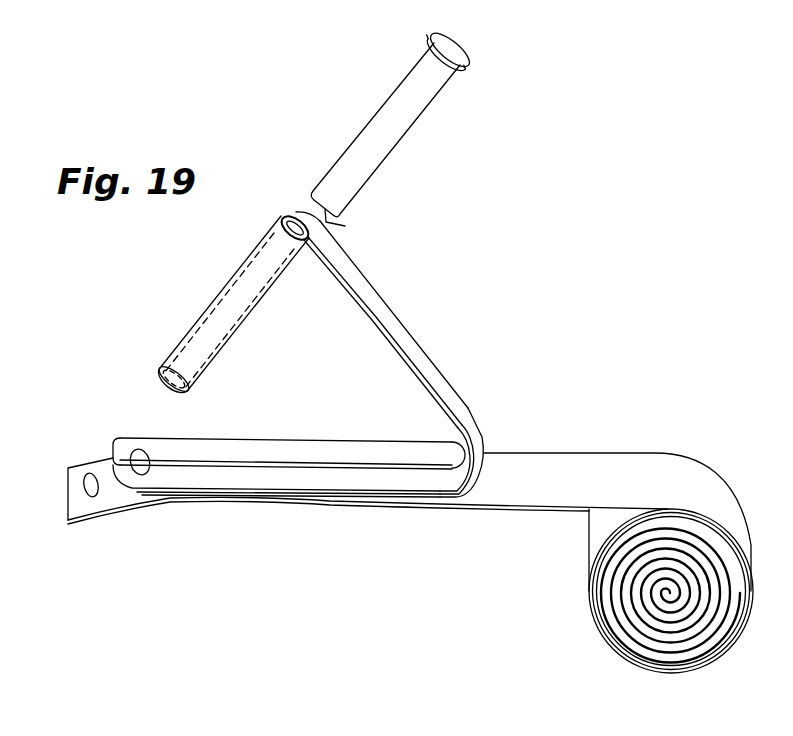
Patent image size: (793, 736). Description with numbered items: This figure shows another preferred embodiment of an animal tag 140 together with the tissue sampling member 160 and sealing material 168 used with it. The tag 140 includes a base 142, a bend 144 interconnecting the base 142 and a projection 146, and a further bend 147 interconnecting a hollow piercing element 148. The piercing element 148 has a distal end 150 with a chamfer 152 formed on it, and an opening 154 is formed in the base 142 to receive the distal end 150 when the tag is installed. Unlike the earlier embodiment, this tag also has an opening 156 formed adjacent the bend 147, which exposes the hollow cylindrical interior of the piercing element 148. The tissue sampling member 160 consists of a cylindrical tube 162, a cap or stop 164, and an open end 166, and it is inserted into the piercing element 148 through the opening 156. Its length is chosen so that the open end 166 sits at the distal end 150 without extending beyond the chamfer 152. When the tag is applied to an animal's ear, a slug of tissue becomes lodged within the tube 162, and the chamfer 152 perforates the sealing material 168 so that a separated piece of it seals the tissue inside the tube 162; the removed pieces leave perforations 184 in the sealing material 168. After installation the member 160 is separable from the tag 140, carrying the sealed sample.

The tag 140 is at (473, 242).
The base 142 is at (287, 478).
The bend 144 is at (492, 483).
The projection 146 is at (423, 363).
The bend 147 is at (302, 217).
The piercing element 148 is at (220, 288).
The distal end 150 is at (134, 372).
The chamfer 152 is at (187, 393).
The opening 154 is at (150, 472).
The opening 156 is at (283, 220).
The tissue sampling member 160 is at (468, 105).
The cylindrical tube 162 is at (383, 135).
The cap or stop 164 is at (453, 50).
The open end 166 is at (345, 226).
The sealing material 168 is at (625, 475).
The perforations 184 is at (95, 494).